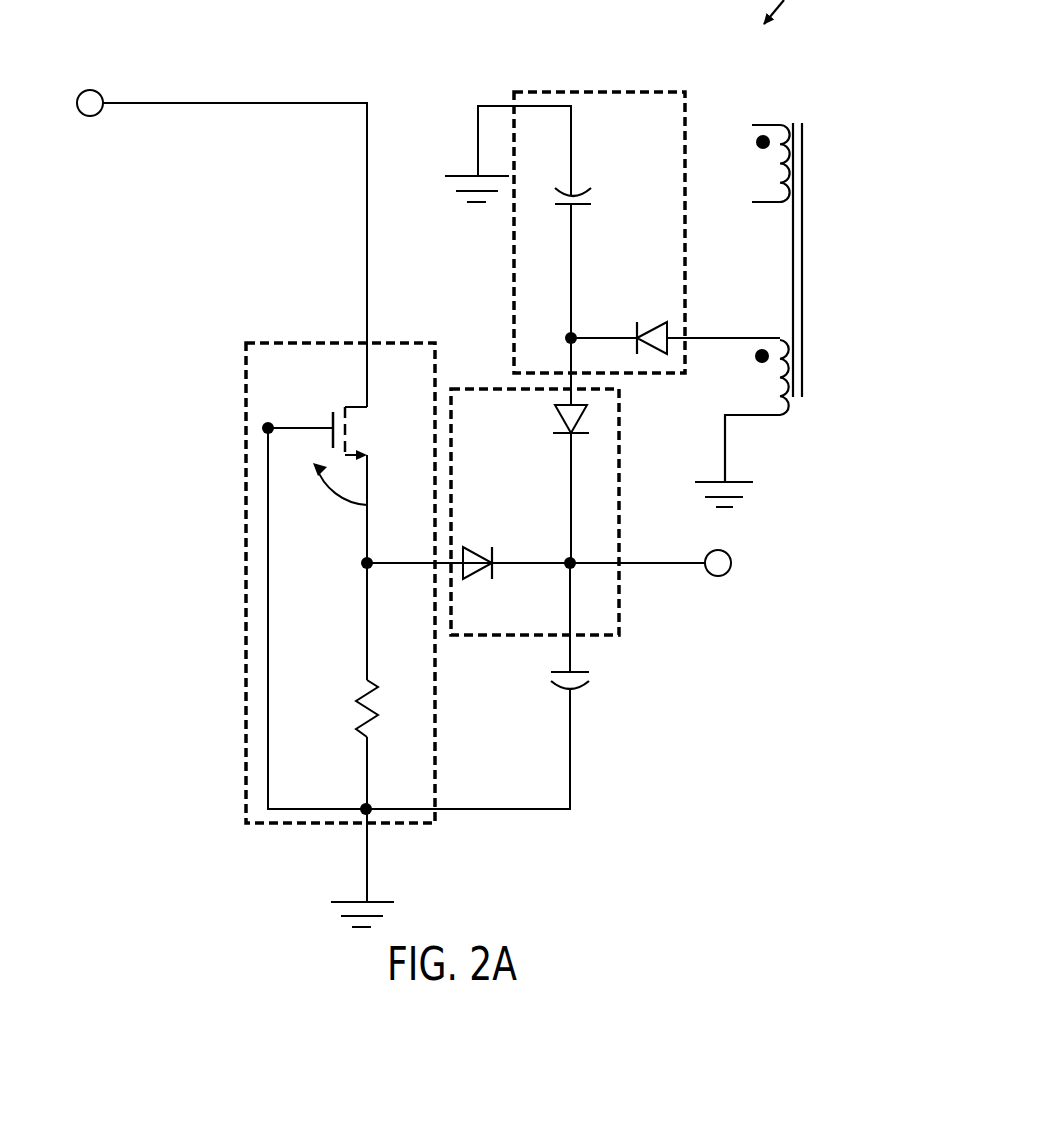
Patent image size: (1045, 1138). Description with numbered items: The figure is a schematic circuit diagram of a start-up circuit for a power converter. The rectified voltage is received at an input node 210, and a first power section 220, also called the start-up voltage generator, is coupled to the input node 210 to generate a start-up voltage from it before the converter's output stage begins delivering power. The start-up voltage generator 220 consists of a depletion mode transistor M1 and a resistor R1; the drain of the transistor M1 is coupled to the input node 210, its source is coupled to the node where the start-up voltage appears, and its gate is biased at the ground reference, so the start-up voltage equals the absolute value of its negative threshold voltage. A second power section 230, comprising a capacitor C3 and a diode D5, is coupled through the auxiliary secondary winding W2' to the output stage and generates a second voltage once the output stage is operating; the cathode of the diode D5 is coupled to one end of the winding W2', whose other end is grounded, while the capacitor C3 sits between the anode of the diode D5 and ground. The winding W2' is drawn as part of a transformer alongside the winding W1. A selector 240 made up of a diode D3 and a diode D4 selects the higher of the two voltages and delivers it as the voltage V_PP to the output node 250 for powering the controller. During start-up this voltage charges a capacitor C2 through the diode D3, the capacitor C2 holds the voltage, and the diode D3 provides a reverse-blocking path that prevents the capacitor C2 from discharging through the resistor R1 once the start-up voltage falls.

The input node 210 is at (86, 116).
The first power section 220 is at (373, 606).
The second power section 230 is at (599, 207).
The selector 240 is at (567, 514).
The output node 250 is at (720, 576).
The depletion mode transistor M1 is at (329, 433).
The resistor R1 is at (383, 708).
The capacitor C2 is at (585, 685).
The capacitor C3 is at (588, 197).
The diode D3 is at (477, 584).
The diode D4 is at (553, 420).
The diode D5 is at (652, 323).
The transformer winding W1 is at (771, 148).
The auxiliary secondary winding W2' is at (757, 411).